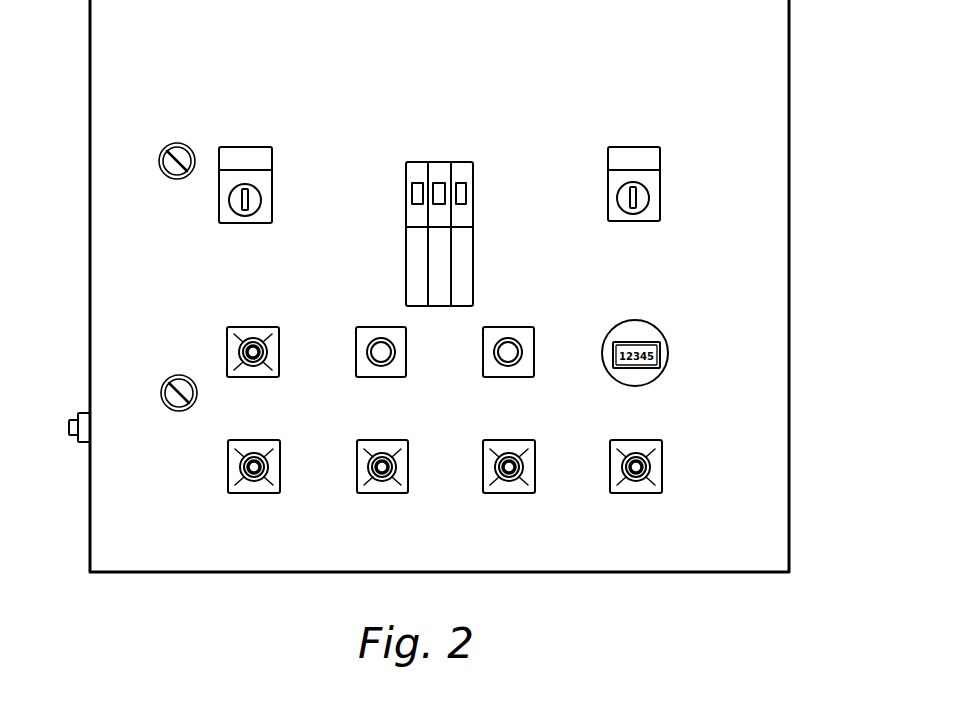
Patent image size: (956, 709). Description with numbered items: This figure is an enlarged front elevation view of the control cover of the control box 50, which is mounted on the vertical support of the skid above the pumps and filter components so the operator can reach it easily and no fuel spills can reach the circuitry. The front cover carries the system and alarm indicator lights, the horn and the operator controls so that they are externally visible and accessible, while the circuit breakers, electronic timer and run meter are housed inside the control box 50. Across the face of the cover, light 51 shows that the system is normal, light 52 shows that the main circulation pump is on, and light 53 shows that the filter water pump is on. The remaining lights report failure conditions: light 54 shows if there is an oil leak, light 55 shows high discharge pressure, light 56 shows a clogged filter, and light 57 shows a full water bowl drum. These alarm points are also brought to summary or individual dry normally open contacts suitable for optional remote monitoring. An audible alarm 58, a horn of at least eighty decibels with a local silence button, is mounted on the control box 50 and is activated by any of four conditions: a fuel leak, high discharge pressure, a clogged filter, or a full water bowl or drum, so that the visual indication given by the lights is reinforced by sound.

The control box 50 is at (808, 203).
The light 51 is at (258, 327).
The light 52 is at (655, 198).
The light 53 is at (265, 185).
The light 54 is at (373, 493).
The light 55 is at (256, 493).
The light 56 is at (504, 493).
The light 57 is at (638, 493).
The audible alarm 58 is at (76, 445).